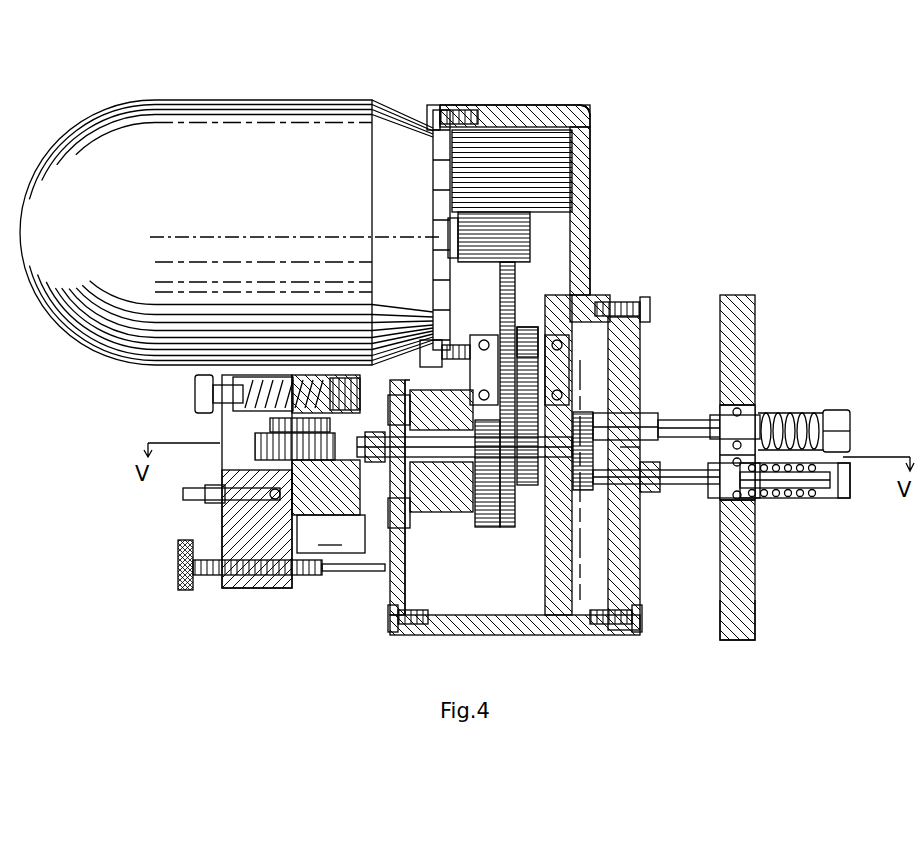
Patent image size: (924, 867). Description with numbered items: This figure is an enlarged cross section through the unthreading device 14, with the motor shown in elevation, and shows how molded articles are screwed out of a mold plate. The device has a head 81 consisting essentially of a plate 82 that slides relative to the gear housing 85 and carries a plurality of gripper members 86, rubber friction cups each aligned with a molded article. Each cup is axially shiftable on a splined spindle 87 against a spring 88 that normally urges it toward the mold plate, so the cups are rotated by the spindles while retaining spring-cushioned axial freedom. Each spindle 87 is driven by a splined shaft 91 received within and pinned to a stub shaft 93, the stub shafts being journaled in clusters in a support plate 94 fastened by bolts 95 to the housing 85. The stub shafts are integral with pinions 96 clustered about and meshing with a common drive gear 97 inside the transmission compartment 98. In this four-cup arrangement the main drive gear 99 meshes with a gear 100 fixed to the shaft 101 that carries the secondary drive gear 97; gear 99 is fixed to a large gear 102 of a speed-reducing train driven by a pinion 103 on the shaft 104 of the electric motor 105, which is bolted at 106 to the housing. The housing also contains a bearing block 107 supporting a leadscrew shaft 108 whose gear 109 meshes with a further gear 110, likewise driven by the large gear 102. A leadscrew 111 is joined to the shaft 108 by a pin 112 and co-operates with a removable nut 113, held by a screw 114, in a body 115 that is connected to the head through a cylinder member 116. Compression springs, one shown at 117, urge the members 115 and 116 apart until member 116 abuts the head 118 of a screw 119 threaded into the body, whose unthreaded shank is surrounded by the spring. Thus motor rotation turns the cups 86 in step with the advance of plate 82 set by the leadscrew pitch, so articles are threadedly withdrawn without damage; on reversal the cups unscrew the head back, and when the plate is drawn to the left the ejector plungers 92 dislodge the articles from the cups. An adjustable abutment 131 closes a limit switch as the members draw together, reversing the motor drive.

The unthreading device 14 is at (397, 100).
The head 81 is at (772, 316).
The plate 82 is at (742, 640).
The gear housing 85 is at (500, 636).
The gripper members 86 is at (845, 412).
The splined spindles 87 is at (758, 414).
The springs 88 is at (798, 413).
The splined shaft 91 is at (690, 420).
The ejector plungers 92 is at (790, 492).
The stub shaft 93 is at (652, 412).
The support plate 94 is at (640, 578).
The bolts 95 is at (642, 298).
The pinion 96 is at (586, 410).
The drive gear 97 is at (640, 452).
The transmission compartment 98 is at (575, 583).
The main drive gear 99 is at (530, 330).
The gear 100 is at (522, 495).
The shaft 101 is at (528, 487).
The large gear 102 is at (500, 300).
The pinion 103 is at (480, 183).
The shaft 104 is at (455, 218).
The electric motor 105 is at (214, 100).
The bolt 106 is at (430, 105).
The bearing block 107 is at (405, 525).
The leadscrew shaft 108 is at (385, 572).
The gear 109 is at (430, 392).
The gear 110 is at (488, 527).
The leadscrew 111 is at (258, 444).
The pin 112 is at (392, 378).
The removable nut 113 is at (225, 465).
The screw 114 is at (270, 422).
The body 115 is at (333, 378).
The cylinder member 116 is at (238, 590).
The compression spring 117 is at (276, 378).
The head 118 is at (195, 396).
The screw 119 is at (220, 376).
The adjustable abutment 131 is at (192, 590).